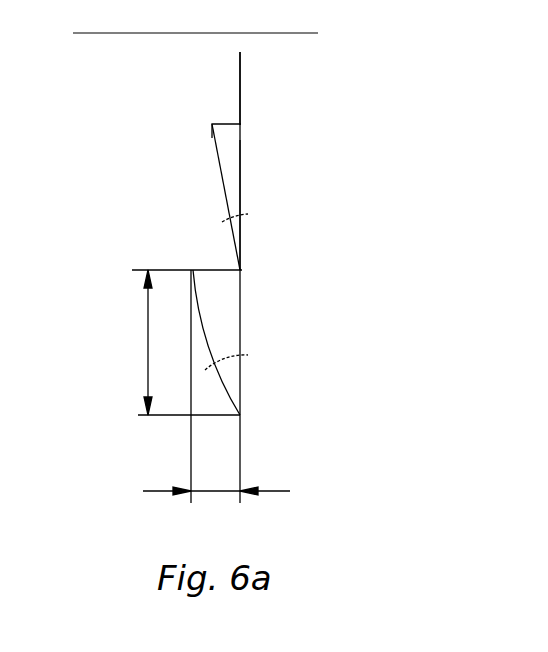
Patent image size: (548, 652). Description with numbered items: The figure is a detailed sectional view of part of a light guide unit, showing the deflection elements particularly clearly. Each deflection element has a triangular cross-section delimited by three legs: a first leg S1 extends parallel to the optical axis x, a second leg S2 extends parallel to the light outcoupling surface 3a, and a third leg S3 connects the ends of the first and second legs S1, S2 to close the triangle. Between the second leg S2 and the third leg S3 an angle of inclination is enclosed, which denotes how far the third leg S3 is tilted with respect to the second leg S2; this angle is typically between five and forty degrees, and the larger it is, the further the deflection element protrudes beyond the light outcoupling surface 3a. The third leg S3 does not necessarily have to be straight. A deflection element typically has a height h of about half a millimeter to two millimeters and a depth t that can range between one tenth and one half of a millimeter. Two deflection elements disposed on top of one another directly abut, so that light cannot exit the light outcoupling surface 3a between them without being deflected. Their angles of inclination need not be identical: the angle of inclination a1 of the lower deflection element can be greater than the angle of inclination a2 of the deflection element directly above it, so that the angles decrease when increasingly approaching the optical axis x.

The light outcoupling surface 3a is at (240, 87).
The first leg S1 is at (232, 124).
The second leg S2 is at (240, 179).
The third leg S3 is at (222, 186).
The angle of inclination of the lower deflection element a1 is at (242, 368).
The angle of inclination of the deflection element disposed directly above a2 is at (237, 226).
The height h is at (176, 342).
The depth t is at (216, 386).
The optical axis x is at (186, 39).